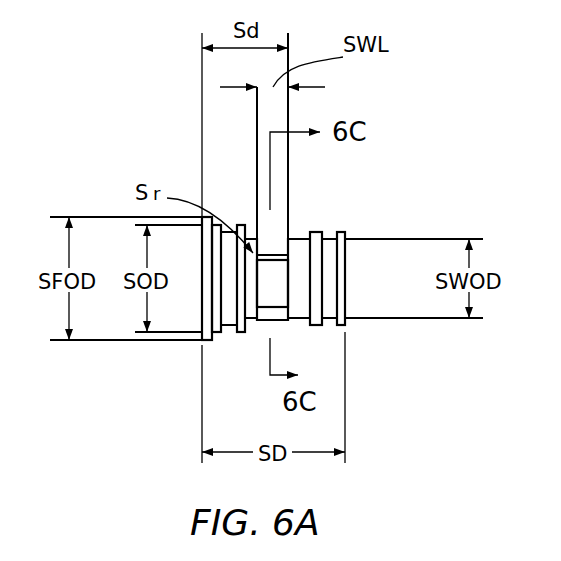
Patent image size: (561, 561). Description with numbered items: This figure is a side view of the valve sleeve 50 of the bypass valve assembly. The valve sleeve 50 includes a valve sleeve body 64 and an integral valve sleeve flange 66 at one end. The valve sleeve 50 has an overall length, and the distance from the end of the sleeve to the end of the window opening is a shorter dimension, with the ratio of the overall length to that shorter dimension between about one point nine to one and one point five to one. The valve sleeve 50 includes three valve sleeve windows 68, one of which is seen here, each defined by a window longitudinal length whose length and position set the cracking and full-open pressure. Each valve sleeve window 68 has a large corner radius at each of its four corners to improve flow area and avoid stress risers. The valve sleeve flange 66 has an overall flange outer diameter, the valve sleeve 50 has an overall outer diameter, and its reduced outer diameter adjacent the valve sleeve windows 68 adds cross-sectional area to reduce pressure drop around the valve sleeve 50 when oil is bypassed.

The valve sleeve 50 is at (168, 130).
The valve sleeve body 64 is at (325, 224).
The valve sleeve flange 66 is at (208, 341).
The valve sleeve window 68 is at (292, 295).